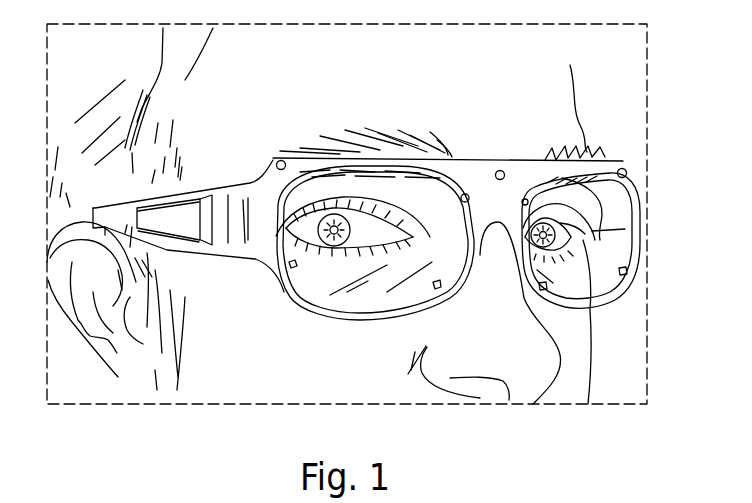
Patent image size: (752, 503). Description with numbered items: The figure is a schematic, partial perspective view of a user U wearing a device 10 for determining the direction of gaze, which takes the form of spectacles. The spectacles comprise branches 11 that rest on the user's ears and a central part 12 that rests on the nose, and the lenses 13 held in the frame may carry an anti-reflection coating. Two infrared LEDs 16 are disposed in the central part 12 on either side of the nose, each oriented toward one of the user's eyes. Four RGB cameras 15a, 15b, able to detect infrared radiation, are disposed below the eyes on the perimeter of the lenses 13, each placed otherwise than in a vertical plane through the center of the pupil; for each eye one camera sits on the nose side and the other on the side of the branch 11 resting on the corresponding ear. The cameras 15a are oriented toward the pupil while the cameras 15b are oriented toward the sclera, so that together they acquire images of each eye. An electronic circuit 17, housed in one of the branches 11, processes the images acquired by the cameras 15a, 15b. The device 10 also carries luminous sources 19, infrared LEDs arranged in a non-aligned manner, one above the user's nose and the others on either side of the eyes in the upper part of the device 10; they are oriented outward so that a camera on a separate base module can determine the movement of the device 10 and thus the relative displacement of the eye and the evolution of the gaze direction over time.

The device for determining the direction of gaze 10 is at (250, 178).
The branches 11 is at (186, 252).
The central part 12 is at (477, 164).
The lenses 13 is at (310, 287).
The RGB cameras 15a is at (290, 267).
The RGB cameras 15b is at (435, 285).
The infrared LEDs 16 is at (466, 194).
The electronic circuit 17 is at (186, 212).
The luminous sources 19 is at (283, 160).
The user U is at (562, 95).